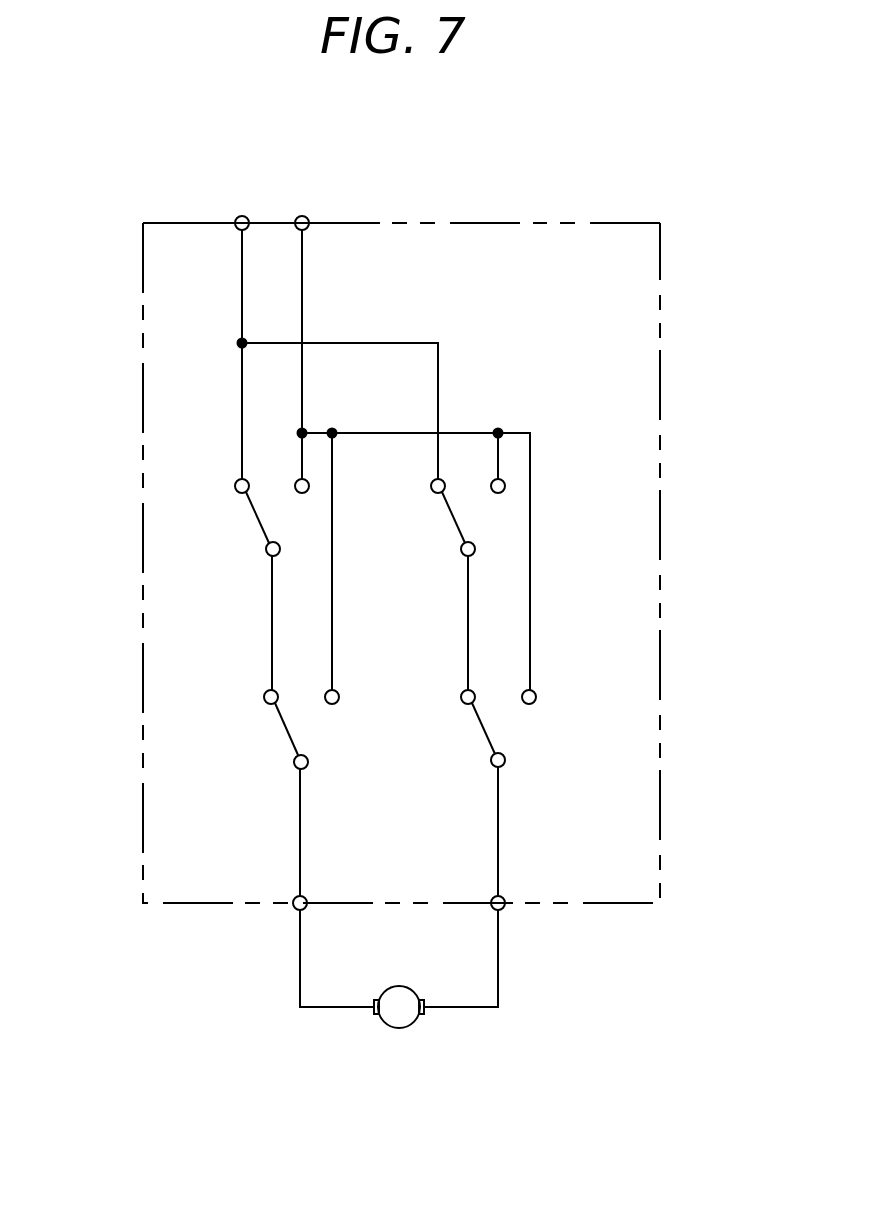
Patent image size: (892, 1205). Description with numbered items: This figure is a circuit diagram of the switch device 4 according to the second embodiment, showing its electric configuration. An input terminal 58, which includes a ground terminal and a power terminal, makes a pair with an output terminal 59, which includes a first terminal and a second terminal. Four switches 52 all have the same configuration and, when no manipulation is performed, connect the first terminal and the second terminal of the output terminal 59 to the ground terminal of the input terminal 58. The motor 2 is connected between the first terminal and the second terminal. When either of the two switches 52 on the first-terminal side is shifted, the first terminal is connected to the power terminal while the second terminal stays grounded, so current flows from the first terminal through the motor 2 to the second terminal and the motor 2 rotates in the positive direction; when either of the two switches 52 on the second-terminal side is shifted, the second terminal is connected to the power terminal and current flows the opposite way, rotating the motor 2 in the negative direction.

The switch device 4 is at (612, 222).
The input terminal 58 is at (250, 221).
The switch 52 is at (265, 528).
The output terminal 59 is at (306, 908).
The motor 2 is at (396, 1028).